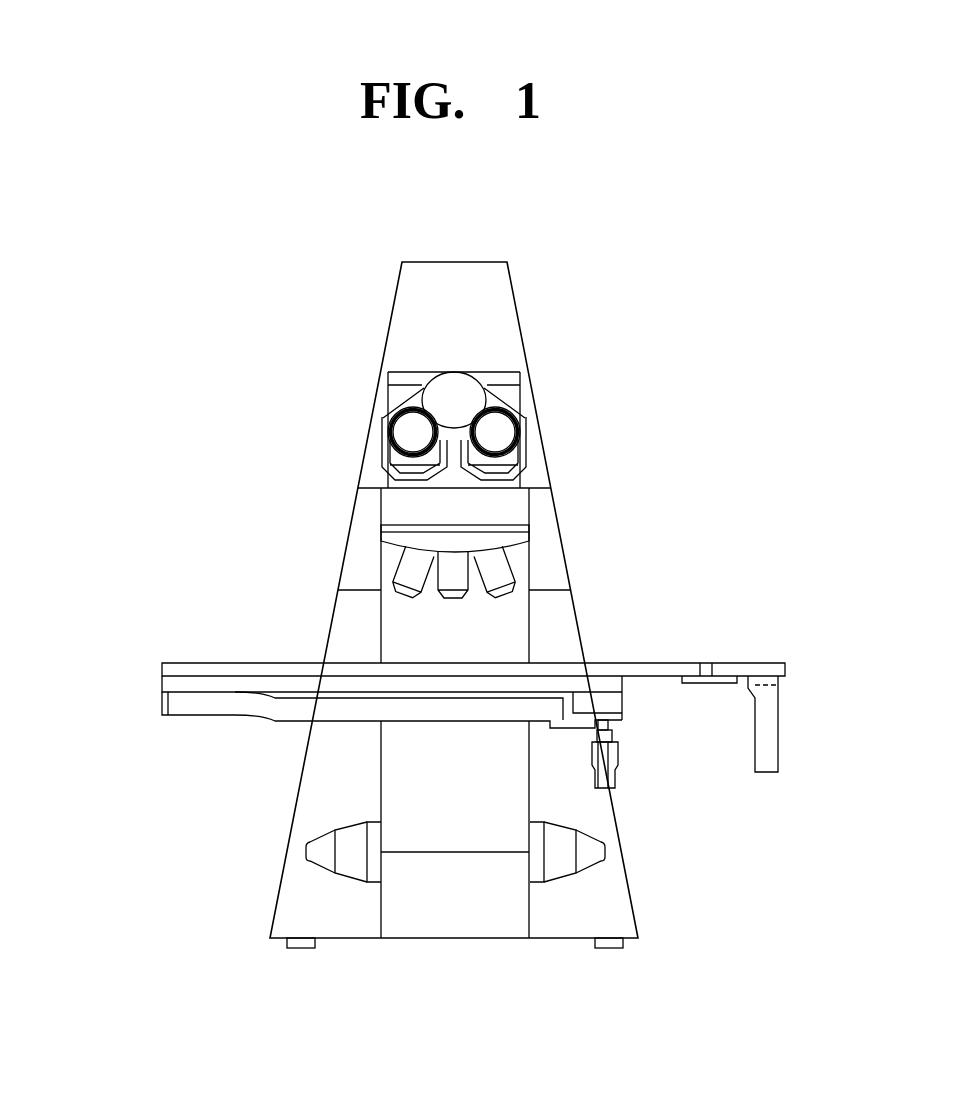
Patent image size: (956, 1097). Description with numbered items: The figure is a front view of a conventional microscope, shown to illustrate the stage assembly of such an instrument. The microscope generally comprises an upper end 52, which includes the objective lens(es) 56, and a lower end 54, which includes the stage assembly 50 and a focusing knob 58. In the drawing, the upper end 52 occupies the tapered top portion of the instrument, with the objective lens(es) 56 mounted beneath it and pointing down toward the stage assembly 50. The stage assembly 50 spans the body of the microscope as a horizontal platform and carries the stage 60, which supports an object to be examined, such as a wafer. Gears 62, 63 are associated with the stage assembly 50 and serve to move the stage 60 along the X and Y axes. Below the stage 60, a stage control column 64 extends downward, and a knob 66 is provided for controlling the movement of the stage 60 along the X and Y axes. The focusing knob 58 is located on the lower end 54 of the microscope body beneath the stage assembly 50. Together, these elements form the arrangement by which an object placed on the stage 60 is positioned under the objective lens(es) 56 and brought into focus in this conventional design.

The stage assembly 50 is at (798, 662).
The upper end 52 is at (600, 262).
The lower end 54 is at (132, 665).
The objective lens 56 is at (410, 558).
The focusing knob 58 is at (604, 852).
The stage 60 is at (603, 663).
The gear 62 is at (597, 722).
The gear 63 is at (699, 677).
The stage control column 64 is at (609, 723).
The knob 66 is at (604, 765).